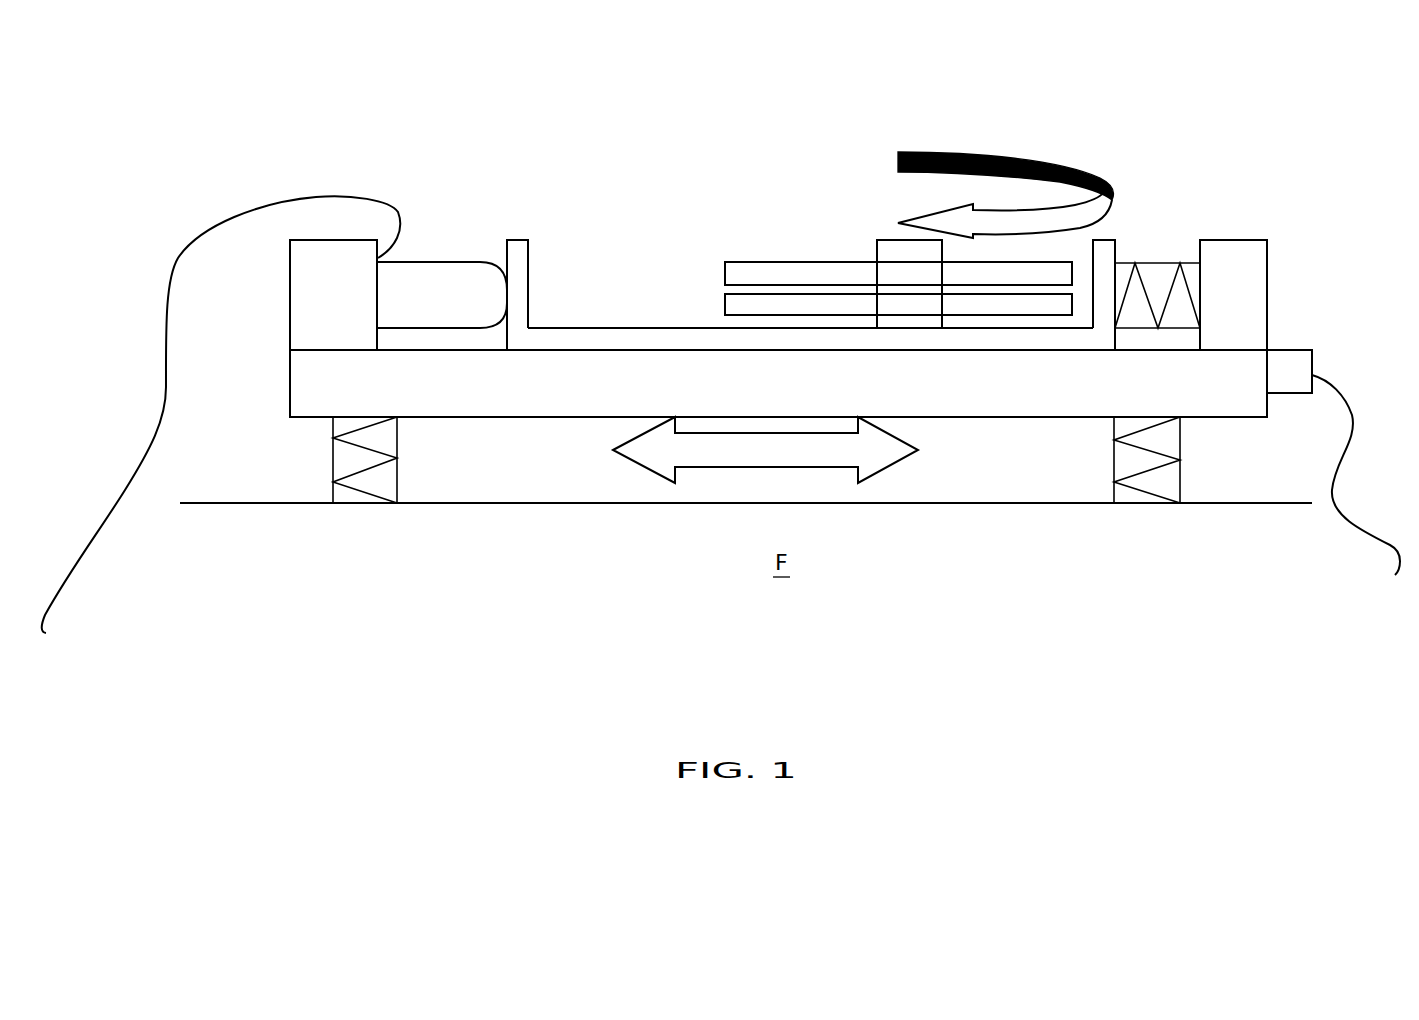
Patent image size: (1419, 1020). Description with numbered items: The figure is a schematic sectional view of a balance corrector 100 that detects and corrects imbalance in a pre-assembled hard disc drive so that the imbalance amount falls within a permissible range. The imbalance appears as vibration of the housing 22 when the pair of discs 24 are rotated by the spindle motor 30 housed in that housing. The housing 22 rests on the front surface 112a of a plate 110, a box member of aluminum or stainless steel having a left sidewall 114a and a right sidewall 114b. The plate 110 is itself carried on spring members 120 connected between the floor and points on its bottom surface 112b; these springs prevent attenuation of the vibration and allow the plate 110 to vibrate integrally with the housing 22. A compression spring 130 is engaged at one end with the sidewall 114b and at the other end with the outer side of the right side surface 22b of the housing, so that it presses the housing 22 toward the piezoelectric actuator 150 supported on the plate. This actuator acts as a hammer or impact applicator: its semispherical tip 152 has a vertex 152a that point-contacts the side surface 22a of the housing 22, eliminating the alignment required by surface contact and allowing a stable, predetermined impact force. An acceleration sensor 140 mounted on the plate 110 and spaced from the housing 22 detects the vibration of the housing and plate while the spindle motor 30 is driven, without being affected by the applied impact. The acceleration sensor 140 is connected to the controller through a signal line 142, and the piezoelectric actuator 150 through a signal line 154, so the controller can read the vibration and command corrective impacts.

The balance corrector 100 is at (793, 119).
The plate 110 is at (290, 385).
The front surface 112a is at (402, 350).
The bottom surface 112b is at (555, 402).
The left sidewall 114a is at (270, 275).
The right sidewall 114b is at (1233, 247).
The spring member 120 is at (385, 482).
The compression spring 130 is at (1155, 278).
The acceleration sensor 140 is at (1297, 363).
The signal line 142 is at (1337, 392).
The piezoelectric actuator 150 is at (422, 280).
The semispherical tip 152 is at (473, 262).
The vertex 152a is at (505, 292).
The signal line 154 is at (277, 200).
The housing 22 is at (555, 340).
The side surface 22a is at (518, 250).
The right side surface 22b is at (1105, 250).
The disc 24 is at (765, 273).
The spindle motor 30 is at (862, 225).